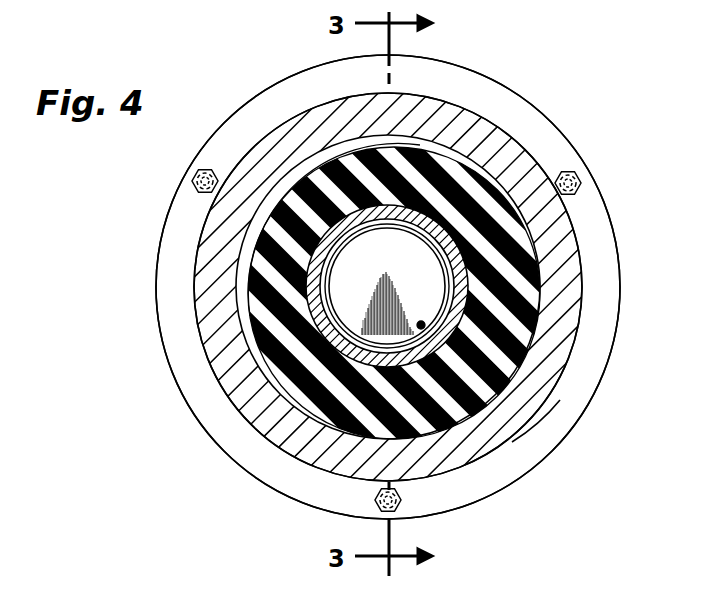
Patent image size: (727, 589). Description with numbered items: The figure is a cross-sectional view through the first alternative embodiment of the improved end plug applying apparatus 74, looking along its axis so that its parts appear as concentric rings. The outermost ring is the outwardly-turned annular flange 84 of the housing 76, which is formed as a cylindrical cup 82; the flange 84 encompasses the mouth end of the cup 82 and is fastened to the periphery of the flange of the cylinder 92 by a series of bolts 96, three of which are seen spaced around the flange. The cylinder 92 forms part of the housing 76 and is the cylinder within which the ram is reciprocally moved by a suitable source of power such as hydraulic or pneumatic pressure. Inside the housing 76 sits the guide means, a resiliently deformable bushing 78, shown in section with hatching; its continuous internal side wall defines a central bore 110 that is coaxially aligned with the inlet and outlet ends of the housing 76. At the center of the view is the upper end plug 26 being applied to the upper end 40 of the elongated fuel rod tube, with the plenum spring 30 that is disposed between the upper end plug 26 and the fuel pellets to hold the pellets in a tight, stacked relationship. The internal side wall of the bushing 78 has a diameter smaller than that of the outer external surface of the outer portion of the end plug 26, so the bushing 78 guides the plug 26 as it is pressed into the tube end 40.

The upper end plug 26 is at (396, 265).
The plenum spring 30 is at (336, 304).
The upper end 40 is at (435, 256).
The end plug applying apparatus 74 is at (569, 131).
The housing 76 is at (606, 223).
The resiliently deformable bushing 78 is at (491, 126).
The cylindrical cup 82 is at (516, 446).
The annular flange 84 is at (483, 76).
The cylinder 92 is at (246, 235).
The bolts 96 is at (190, 182).
The central bore 110 is at (296, 158).